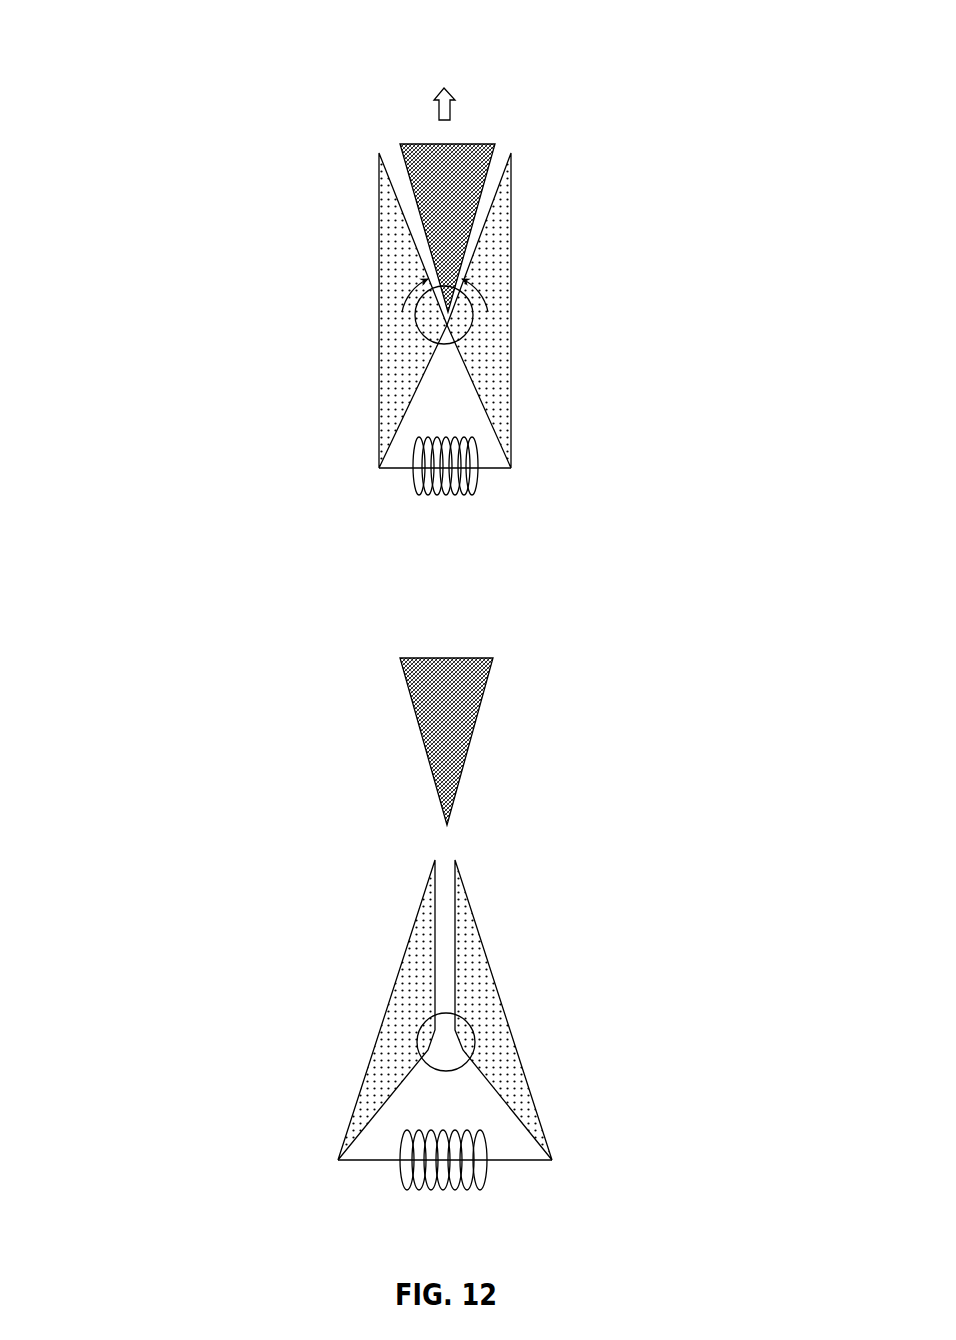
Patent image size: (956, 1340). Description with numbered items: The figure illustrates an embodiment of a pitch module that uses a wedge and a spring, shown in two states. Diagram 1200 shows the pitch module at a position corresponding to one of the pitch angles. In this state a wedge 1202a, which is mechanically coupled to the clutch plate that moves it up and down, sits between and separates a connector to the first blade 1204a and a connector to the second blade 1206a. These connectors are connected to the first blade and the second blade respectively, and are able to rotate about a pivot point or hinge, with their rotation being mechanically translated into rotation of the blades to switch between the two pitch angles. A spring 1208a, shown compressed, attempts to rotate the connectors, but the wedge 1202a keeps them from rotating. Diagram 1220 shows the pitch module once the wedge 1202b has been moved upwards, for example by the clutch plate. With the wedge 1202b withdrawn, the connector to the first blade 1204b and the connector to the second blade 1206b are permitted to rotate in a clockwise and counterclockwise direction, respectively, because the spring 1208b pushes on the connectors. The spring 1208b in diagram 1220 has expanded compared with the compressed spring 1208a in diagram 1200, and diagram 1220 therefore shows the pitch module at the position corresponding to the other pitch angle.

The diagram 1200 is at (632, 38).
The wedge 1202a is at (468, 140).
The connector to first blade 1204a is at (378, 278).
The connector to second blade 1206a is at (512, 312).
The spring 1208a is at (413, 480).
The diagram 1220 is at (614, 611).
The wedge 1202b is at (483, 720).
The connector to first blade 1204b is at (388, 1013).
The connector to second blade 1206b is at (503, 1002).
The spring 1208b is at (400, 1168).